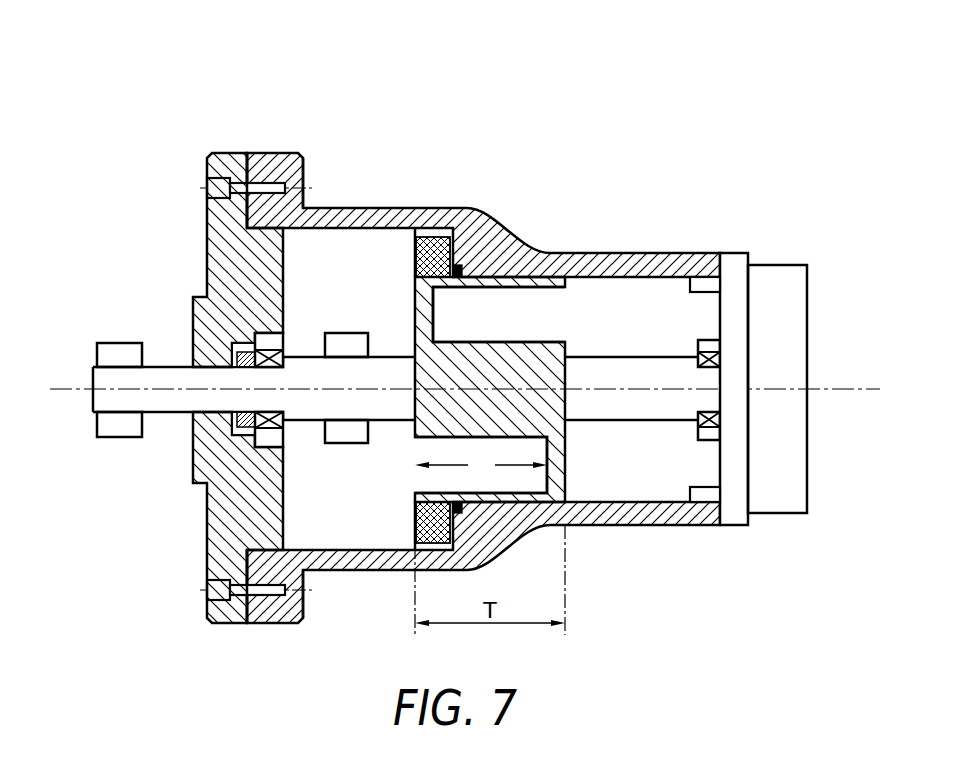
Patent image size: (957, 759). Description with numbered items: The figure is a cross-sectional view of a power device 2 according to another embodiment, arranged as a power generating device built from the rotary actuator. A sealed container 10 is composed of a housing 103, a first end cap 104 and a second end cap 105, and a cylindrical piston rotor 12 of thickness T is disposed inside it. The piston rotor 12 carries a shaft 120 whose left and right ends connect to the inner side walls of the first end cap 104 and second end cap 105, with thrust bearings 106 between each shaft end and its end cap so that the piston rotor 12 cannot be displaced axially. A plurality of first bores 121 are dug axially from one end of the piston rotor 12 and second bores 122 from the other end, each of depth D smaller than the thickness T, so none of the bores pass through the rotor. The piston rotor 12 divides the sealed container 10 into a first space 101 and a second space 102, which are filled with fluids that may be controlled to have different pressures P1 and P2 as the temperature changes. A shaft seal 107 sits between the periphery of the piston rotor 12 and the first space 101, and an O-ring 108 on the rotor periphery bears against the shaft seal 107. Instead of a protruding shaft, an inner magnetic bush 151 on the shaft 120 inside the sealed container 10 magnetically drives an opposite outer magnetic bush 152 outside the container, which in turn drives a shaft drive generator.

The power device 2 is at (798, 86).
The sealed container 10 is at (545, 242).
The piston rotor 12 is at (580, 342).
The first space 101 is at (304, 298).
The second space 102 is at (618, 473).
The housing 103 is at (328, 212).
The first end cap 104 is at (222, 233).
The second end cap 105 is at (733, 255).
The thrust bearing 106 is at (263, 425).
The shaft seal 107 is at (428, 240).
The O-ring 108 is at (459, 265).
The shaft 120 is at (160, 375).
The first bore 121 is at (416, 485).
The second bore 122 is at (549, 312).
The inner magnetic bush 151 is at (363, 322).
The outer magnetic bush 152 is at (95, 333).
The pressure of the first space P1 is at (349, 450).
The pressure of the second space P2 is at (642, 327).